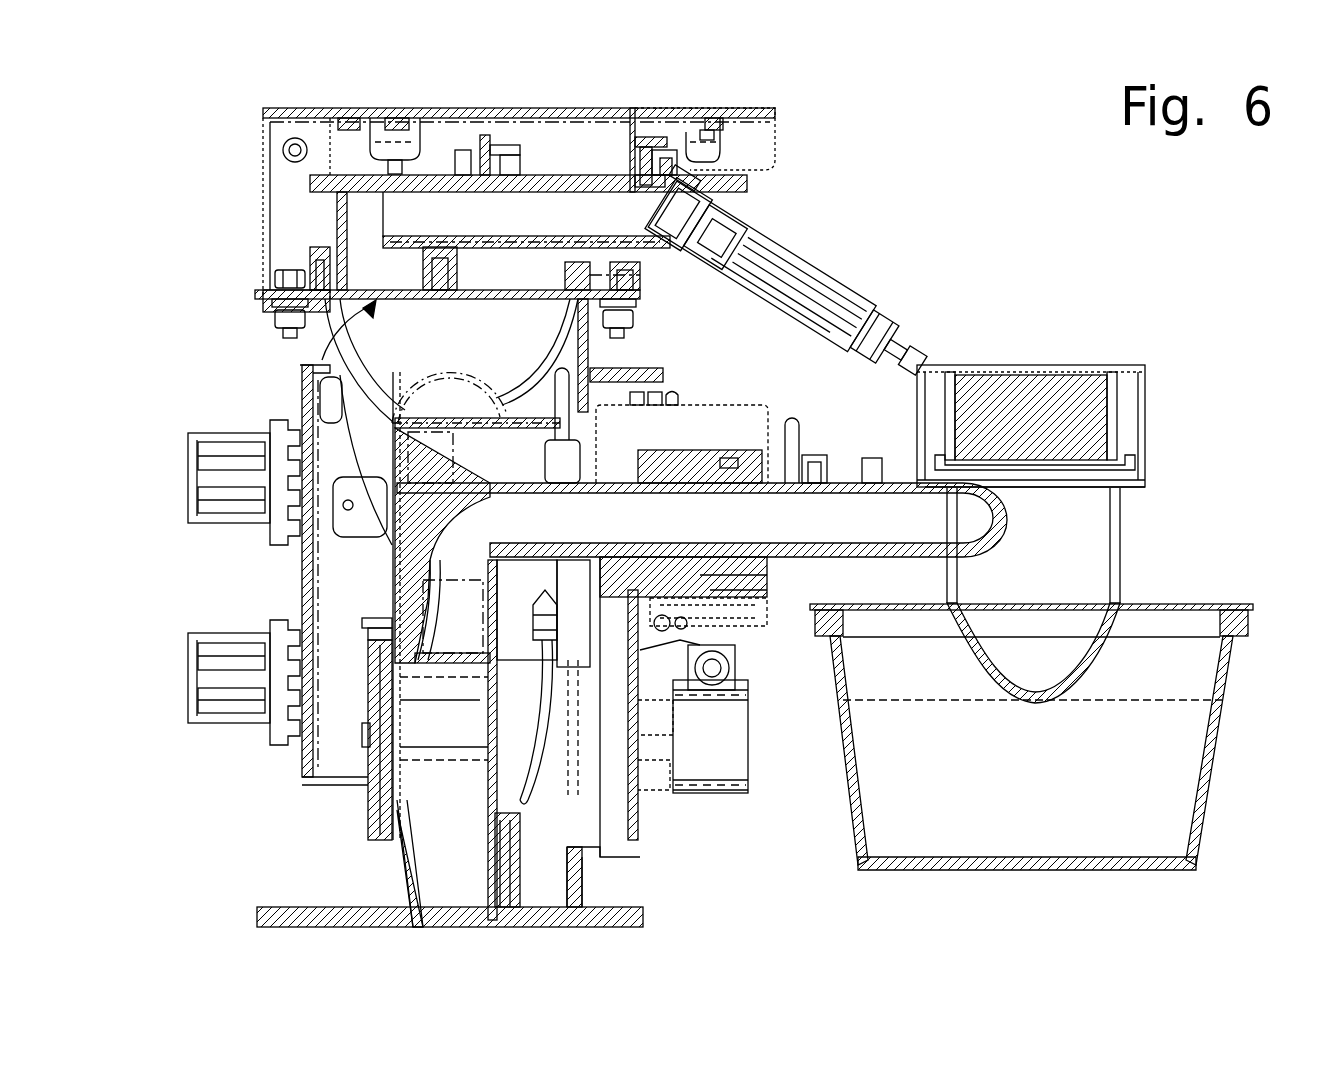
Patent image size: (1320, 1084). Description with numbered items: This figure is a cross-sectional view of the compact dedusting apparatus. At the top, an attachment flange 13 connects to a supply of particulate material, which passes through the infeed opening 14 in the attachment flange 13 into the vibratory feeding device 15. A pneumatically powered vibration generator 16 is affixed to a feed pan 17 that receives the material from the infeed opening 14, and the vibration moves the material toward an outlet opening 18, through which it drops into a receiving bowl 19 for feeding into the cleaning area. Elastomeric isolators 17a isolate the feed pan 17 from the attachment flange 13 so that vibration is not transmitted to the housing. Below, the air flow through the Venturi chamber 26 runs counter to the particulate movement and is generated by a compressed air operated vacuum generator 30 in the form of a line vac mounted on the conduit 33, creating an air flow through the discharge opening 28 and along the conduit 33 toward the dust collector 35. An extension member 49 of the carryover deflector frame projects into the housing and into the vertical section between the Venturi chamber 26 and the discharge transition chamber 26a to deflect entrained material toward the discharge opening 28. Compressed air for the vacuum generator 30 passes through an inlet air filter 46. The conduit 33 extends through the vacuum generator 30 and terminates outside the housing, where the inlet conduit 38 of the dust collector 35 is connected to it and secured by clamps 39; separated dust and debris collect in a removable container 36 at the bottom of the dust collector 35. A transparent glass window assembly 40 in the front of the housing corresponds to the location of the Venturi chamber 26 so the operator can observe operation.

The attachment flange 13 is at (330, 107).
The infeed opening 14 is at (575, 104).
The vibratory feeding device 15 is at (795, 160).
The pneumatically powered vibration generator 16 is at (815, 265).
The feed pan 17 is at (650, 250).
The elastomeric isolators 17a is at (370, 143).
The outlet opening 18 is at (322, 360).
The receiving bowl 19 is at (355, 390).
The Venturi chamber 26 is at (465, 843).
The discharge transition chamber 26a is at (440, 628).
The discharge opening 28 is at (443, 905).
The vacuum generator 30 is at (696, 420).
The conduit 33 is at (735, 518).
The dust collector 35 is at (895, 833).
The removable container 36 is at (1122, 868).
The inlet conduit 38 is at (940, 527).
The clamps 39 is at (843, 550).
The transparent glass window assembly 40 is at (340, 801).
The inlet air filter 46 is at (707, 750).
The extension member 49 is at (403, 693).